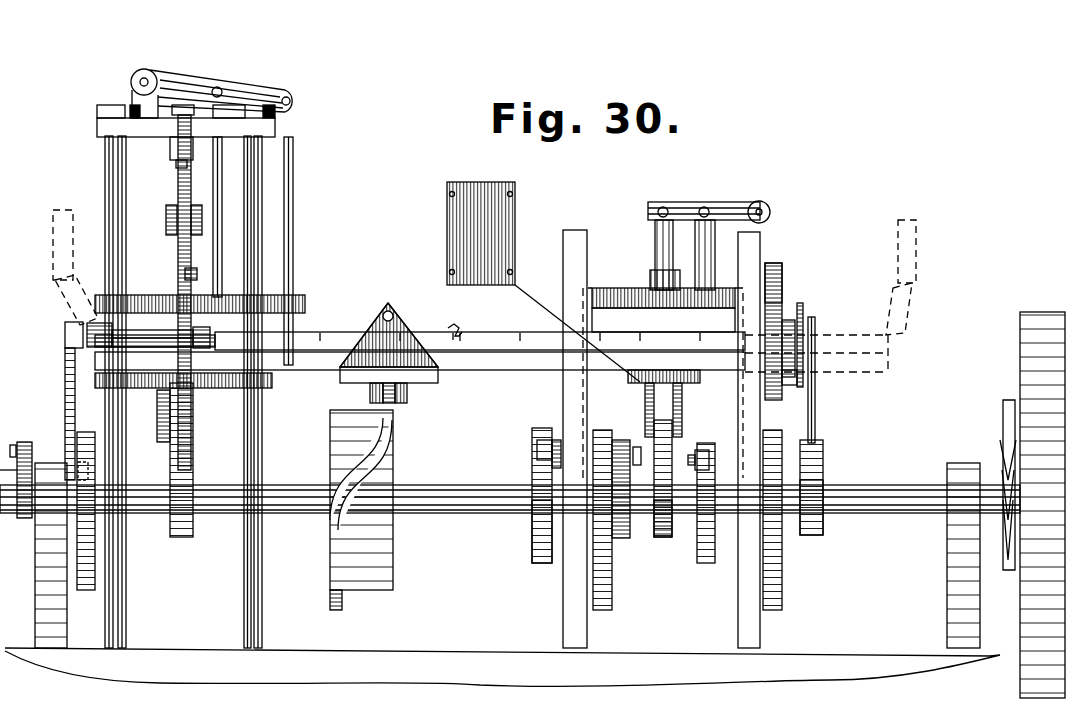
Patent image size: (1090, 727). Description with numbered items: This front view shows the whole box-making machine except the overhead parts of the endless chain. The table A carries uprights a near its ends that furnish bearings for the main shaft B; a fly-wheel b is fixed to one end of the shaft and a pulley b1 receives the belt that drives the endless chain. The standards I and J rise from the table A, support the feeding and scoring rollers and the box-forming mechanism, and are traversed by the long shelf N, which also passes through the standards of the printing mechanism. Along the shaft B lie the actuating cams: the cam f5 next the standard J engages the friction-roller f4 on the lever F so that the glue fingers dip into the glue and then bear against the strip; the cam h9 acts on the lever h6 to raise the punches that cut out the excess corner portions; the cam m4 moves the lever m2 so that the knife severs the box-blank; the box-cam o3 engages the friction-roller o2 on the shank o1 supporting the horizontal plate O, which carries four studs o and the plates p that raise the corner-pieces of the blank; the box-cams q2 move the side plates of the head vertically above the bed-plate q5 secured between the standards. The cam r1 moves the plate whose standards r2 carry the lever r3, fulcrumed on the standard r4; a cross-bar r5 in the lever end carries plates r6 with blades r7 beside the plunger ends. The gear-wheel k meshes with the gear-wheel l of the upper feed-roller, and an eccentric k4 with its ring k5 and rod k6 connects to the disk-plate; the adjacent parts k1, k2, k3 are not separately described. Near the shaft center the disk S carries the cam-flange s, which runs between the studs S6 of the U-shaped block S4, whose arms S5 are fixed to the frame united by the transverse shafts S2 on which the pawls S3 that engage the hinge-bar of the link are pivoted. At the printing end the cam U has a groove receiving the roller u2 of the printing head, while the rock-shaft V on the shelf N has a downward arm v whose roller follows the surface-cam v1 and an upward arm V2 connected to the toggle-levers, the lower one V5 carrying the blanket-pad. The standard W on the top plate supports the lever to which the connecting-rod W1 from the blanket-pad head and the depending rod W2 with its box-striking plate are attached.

The base plate or table A is at (345, 680).
The main shaft B is at (828, 518).
The standard W is at (132, 95).
The connecting-rod W1 is at (220, 215).
The rod W2 is at (290, 225).
The rock-shaft V is at (170, 333).
The upwardly-extending arm V2 is at (178, 255).
The toggle-lever V5 is at (180, 205).
The downwardly-extending arm v is at (66, 418).
The surface-cam v1 is at (82, 592).
The uprights or standards a is at (35, 617).
The cam U is at (193, 525).
The roller u2 is at (178, 428).
The disk S is at (398, 580).
The cam-flange s is at (342, 608).
The transverse shafts S2 is at (383, 306).
The pawls S3 is at (449, 334).
The U-shaped plate or block S4 is at (430, 378).
The arms S5 is at (366, 320).
The studs S6 is at (370, 393).
The long bar or shelf N is at (468, 370).
The horizontal plate p is at (450, 186).
The studs o is at (452, 196).
The standard J is at (563, 636).
The standard I is at (760, 628).
The bed-plate q5 is at (626, 312).
The box-cams q2 is at (622, 590).
The horizontal plate O is at (690, 383).
The shank or standard o1 is at (645, 395).
The friction-roller o2 is at (666, 430).
The box-cam o3 is at (666, 540).
The lever m2 is at (700, 450).
The cam m4 is at (698, 555).
The lever h6 is at (632, 440).
The cam h9 is at (622, 538).
The lever F is at (558, 440).
The friction-roller f4 is at (537, 450).
The cam f5 is at (532, 545).
The cam r1 is at (782, 592).
The standards r2 is at (770, 220).
The lever r3 is at (728, 204).
The standard r4 is at (722, 252).
The cross-bar r5 is at (661, 207).
The plate or bar r6 is at (656, 250).
The blade r7 is at (651, 280).
The gear-wheel k is at (780, 390).
The gear-wheel l is at (780, 282).
The hub k1 is at (784, 378).
The disk k2 is at (803, 320).
The pinion k3 is at (786, 322).
The eccentric k4 is at (823, 480).
The eccentric ring k5 is at (823, 448).
The rod k6 is at (815, 400).
The fly-wheel b is at (1065, 575).
The pulley b1 is at (1002, 575).